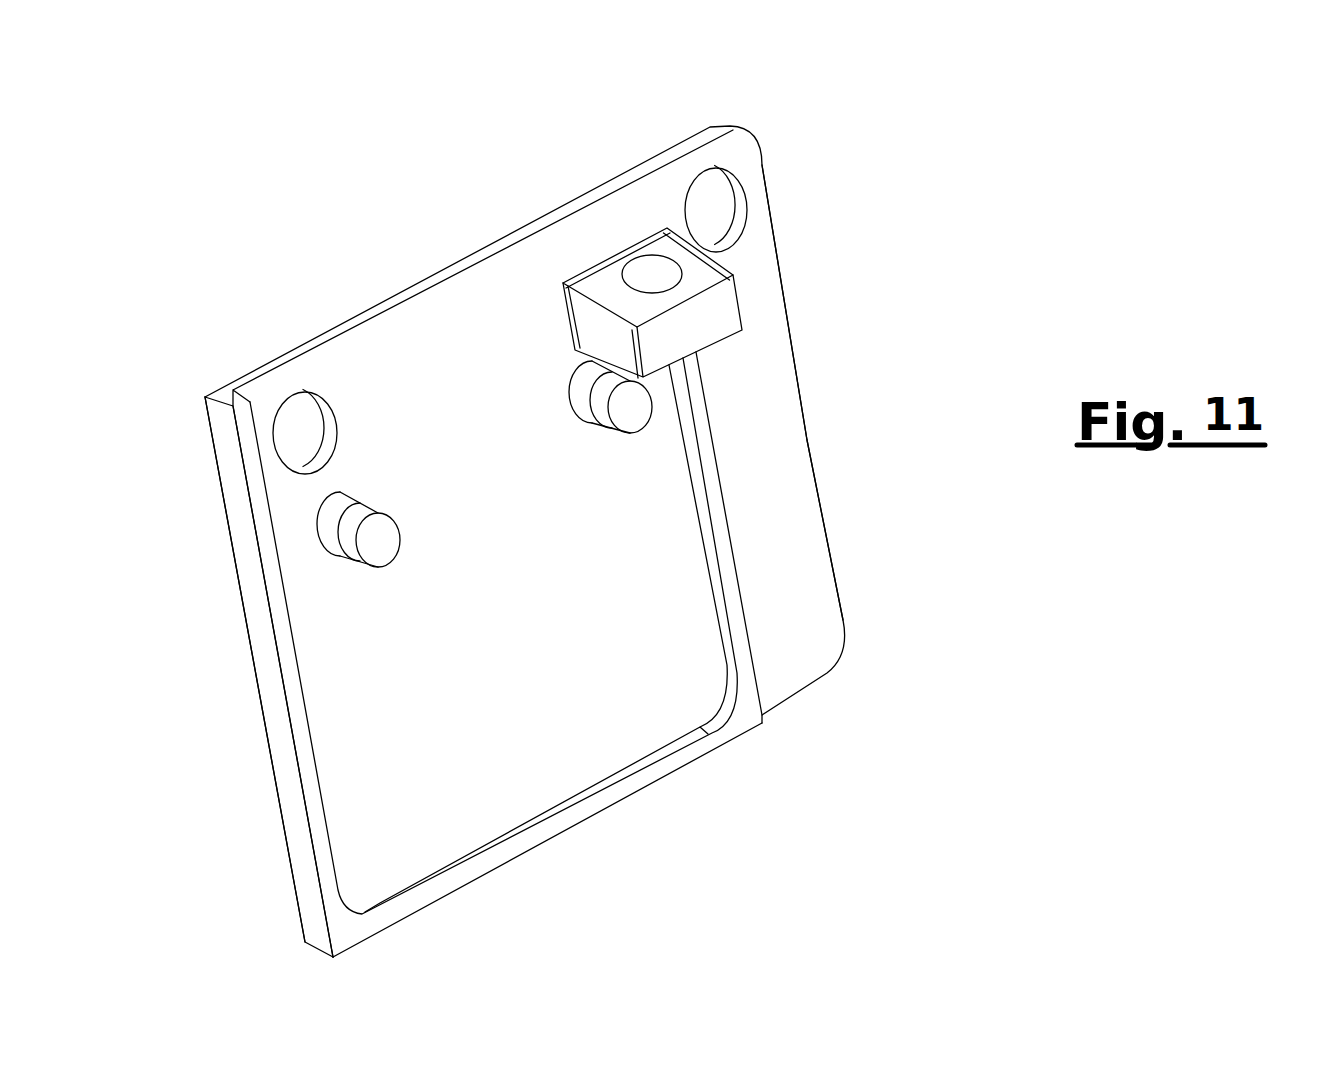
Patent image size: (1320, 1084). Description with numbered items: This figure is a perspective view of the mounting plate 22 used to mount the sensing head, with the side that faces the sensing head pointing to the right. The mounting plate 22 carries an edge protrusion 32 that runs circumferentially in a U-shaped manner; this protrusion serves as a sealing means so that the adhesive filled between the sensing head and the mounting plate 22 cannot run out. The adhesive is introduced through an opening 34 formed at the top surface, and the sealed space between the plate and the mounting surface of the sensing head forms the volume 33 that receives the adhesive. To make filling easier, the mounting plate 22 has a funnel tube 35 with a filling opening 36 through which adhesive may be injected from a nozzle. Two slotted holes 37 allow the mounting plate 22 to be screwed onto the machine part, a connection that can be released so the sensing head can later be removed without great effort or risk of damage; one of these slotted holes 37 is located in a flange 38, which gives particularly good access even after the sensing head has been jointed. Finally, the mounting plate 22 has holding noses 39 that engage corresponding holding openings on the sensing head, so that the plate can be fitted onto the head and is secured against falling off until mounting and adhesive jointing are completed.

The mounting plate 22 is at (878, 390).
The edge protrusion 32 is at (537, 837).
The volume for adhesive 33 is at (320, 673).
The opening 34 is at (410, 335).
The funnel tube 35 is at (643, 267).
The filling opening 36 is at (666, 230).
The slotted holes 37 is at (303, 408).
The flange 38 is at (822, 567).
The holding noses 39 is at (623, 420).